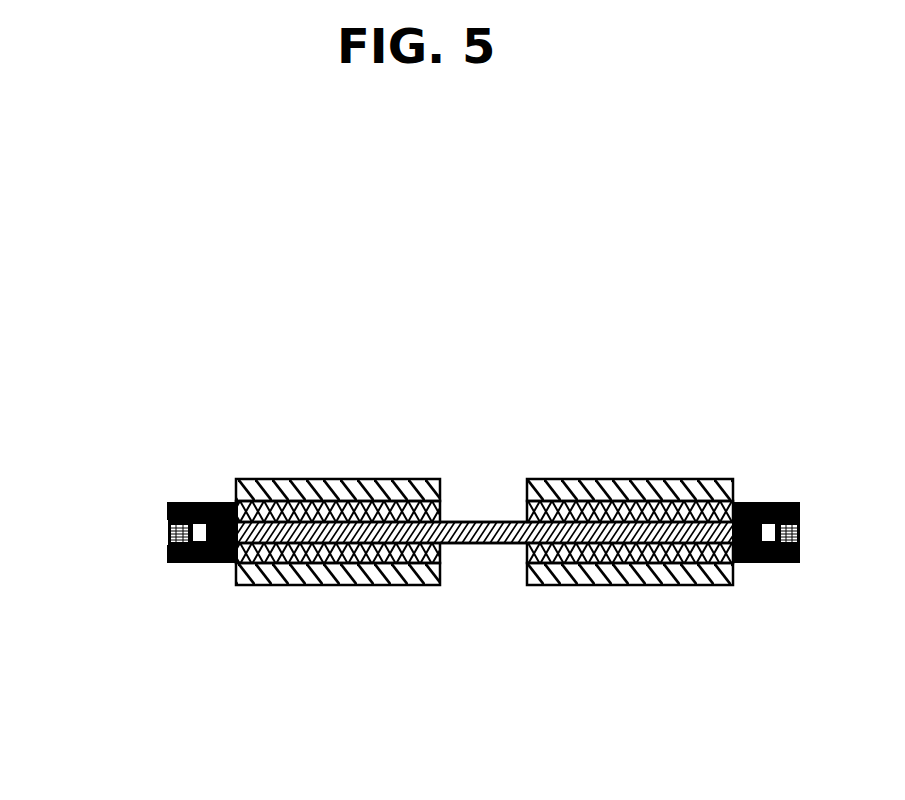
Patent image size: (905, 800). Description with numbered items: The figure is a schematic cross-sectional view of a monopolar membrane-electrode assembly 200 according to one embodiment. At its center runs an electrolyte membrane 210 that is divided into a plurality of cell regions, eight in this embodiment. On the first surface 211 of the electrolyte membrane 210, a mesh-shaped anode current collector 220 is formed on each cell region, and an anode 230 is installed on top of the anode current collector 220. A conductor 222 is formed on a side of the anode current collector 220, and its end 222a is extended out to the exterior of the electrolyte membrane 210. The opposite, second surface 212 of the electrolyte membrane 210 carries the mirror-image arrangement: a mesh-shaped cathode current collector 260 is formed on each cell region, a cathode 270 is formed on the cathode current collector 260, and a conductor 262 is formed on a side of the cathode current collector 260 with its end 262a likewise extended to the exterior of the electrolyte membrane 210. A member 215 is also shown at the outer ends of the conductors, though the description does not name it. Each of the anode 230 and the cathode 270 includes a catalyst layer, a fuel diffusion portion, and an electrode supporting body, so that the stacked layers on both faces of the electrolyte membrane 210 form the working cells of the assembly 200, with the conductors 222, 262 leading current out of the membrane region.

The monopolar membrane-electrode assembly 200 is at (115, 327).
The electrolyte membrane 210 is at (503, 522).
The first surface 211 is at (470, 522).
The second surface 212 is at (470, 543).
The insulating member 215 is at (170, 529).
The anode current collector 220 is at (613, 512).
The conductor 222 is at (197, 502).
The end of conductor 222a is at (168, 505).
The anode 230 is at (280, 479).
The cathode current collector 260 is at (608, 563).
The conductor 262 is at (200, 563).
The end of conductor 262a is at (168, 553).
The cathode 270 is at (356, 570).